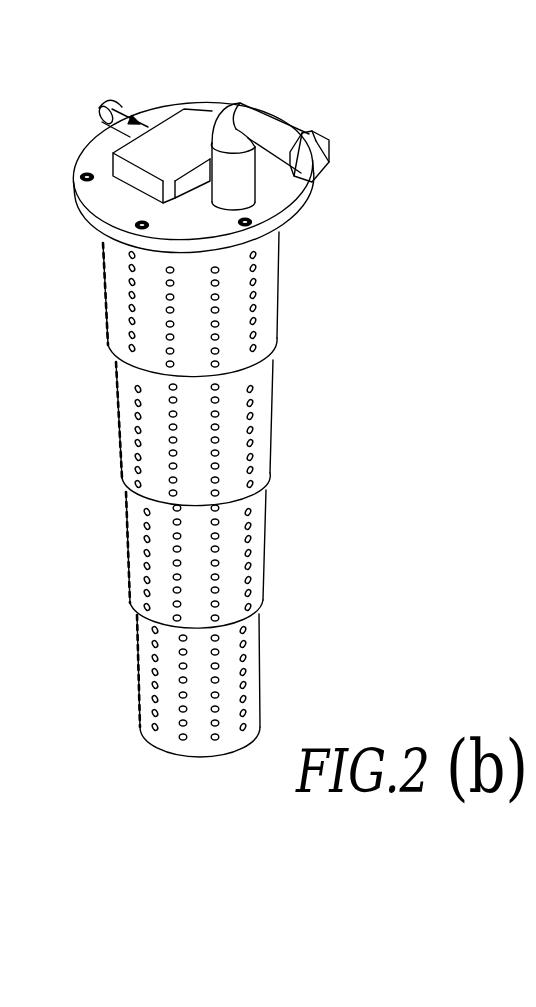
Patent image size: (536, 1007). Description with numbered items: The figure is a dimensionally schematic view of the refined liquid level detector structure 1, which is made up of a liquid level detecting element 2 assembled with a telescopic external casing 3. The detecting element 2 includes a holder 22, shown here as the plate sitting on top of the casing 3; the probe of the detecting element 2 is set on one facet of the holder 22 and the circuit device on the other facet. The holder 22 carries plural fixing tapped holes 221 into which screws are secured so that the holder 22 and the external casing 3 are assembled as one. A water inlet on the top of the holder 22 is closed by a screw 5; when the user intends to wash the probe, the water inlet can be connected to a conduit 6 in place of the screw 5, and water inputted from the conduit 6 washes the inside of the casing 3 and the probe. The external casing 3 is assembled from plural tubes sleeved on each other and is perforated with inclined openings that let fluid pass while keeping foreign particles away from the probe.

The refined liquid level detector structure 1 is at (150, 71).
The liquid level detecting element 2 is at (201, 101).
The holder 22 is at (91, 232).
The fixing tapped hole 221 is at (86, 172).
The telescopic external casing 3 is at (275, 398).
The screw 5 is at (332, 154).
The conduit 6 is at (285, 122).